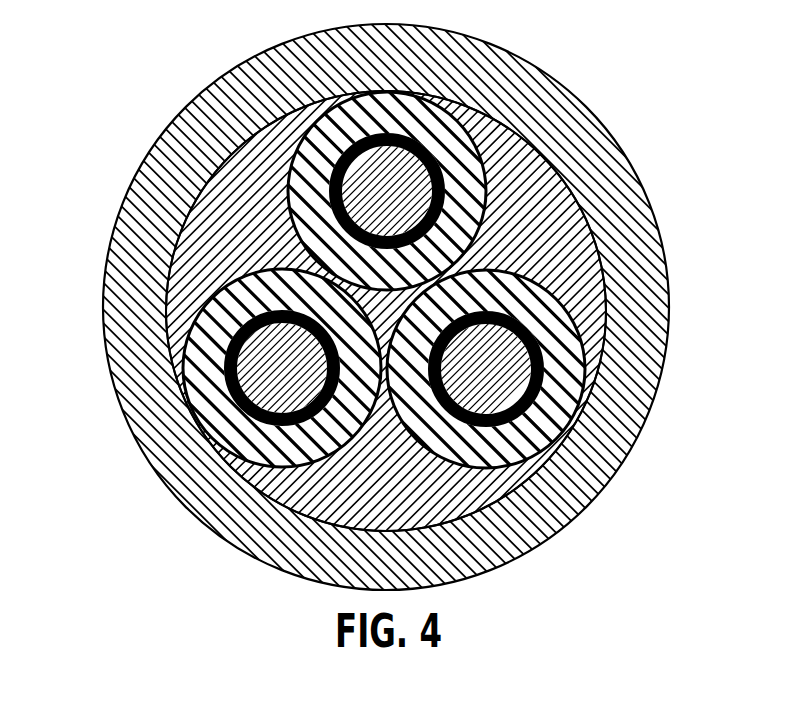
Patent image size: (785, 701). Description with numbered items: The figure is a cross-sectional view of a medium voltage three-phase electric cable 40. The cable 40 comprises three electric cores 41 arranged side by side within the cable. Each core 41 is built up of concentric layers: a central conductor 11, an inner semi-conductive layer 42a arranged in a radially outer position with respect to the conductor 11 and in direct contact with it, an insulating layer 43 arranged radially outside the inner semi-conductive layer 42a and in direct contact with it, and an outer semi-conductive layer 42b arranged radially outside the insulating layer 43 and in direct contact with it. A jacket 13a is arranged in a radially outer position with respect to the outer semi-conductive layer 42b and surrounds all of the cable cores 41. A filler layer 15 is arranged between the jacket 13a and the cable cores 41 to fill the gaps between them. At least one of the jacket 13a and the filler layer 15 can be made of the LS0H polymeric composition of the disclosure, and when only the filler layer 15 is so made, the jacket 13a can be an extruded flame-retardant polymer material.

The electric cable 40 is at (122, 130).
The conductor 11 is at (520, 530).
The jacket 13a is at (655, 283).
The filler layer 15 is at (210, 207).
The electric core 41 is at (210, 273).
The inner semi-conductive layer 42a is at (545, 341).
The outer semi-conductive layer 42b is at (553, 412).
The insulating layer 43 is at (610, 423).